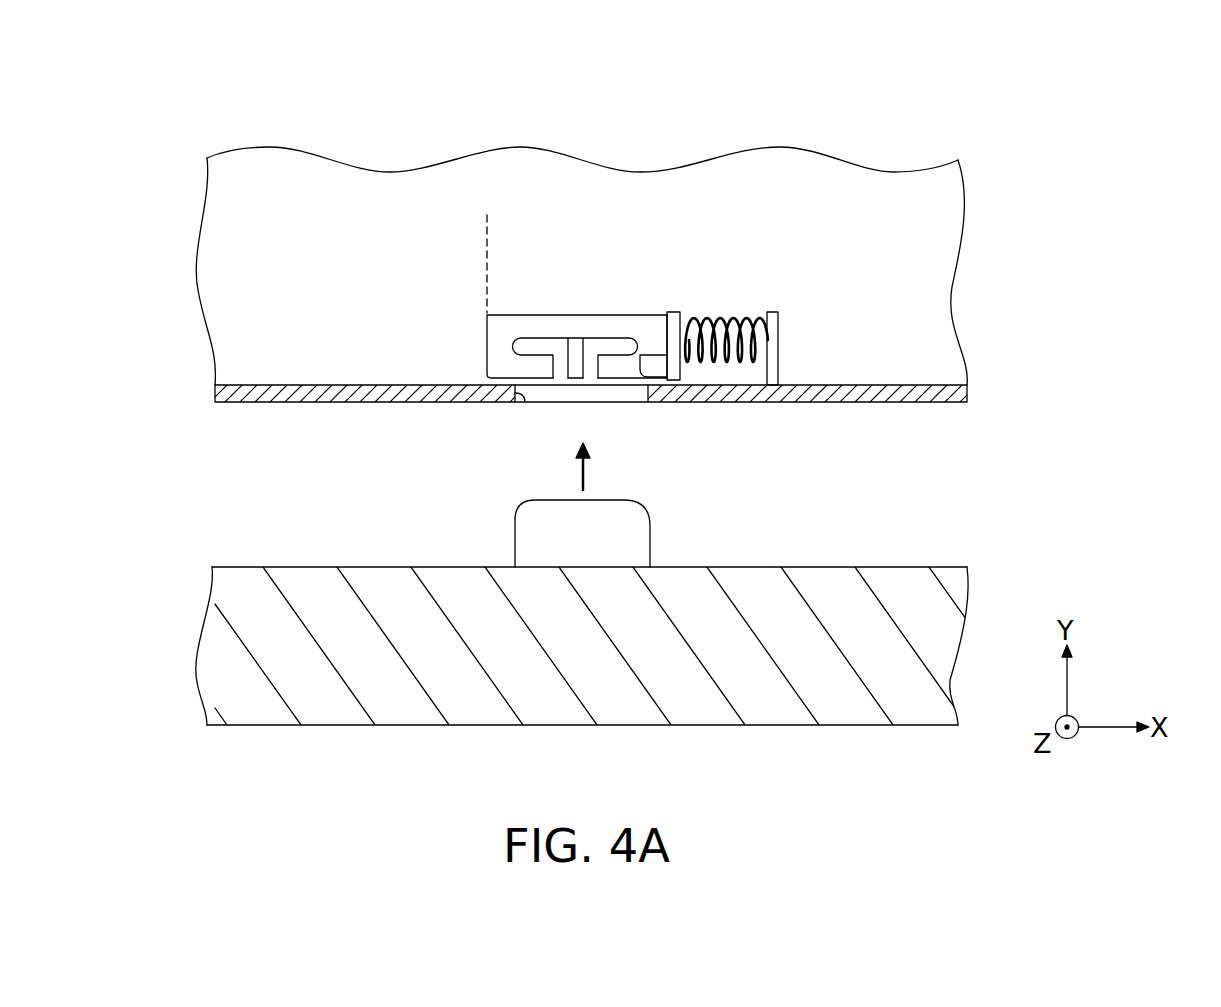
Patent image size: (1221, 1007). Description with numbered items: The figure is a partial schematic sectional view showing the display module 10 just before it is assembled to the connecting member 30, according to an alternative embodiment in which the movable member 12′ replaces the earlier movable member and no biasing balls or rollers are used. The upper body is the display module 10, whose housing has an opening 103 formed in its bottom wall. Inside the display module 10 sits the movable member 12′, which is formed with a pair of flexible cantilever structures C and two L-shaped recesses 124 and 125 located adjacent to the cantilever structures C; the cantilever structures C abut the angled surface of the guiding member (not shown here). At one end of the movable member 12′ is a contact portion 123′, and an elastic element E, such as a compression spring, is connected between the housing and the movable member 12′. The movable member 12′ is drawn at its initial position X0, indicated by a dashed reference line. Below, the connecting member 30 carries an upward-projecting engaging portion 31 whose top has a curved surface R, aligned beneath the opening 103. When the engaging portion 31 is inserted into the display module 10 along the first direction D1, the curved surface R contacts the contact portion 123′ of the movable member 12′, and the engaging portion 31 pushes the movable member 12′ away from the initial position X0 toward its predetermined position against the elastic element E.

The display module 10 is at (986, 143).
The opening 103 is at (522, 398).
The movable member 12′ is at (512, 328).
The L-shaped recess 124 is at (537, 347).
The L-shaped recess 125 is at (617, 347).
The contact portion 123′ is at (650, 363).
The elastic element E is at (760, 357).
The cantilever structures C is at (543, 367).
The first direction D1 is at (603, 466).
The initial position X0 is at (486, 250).
The connecting member 30 is at (988, 548).
The engaging portion 31 is at (537, 537).
The curved surface R is at (642, 505).